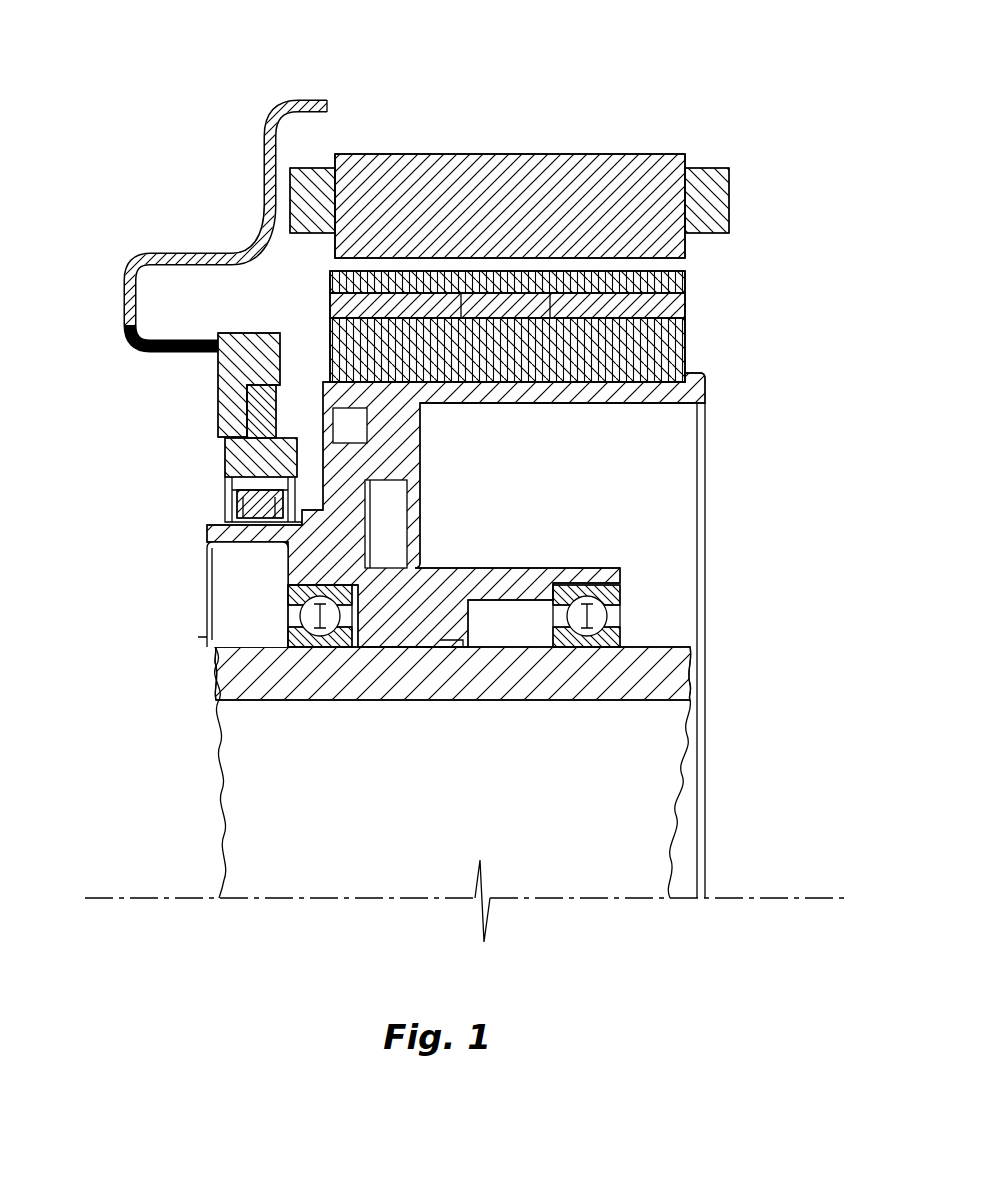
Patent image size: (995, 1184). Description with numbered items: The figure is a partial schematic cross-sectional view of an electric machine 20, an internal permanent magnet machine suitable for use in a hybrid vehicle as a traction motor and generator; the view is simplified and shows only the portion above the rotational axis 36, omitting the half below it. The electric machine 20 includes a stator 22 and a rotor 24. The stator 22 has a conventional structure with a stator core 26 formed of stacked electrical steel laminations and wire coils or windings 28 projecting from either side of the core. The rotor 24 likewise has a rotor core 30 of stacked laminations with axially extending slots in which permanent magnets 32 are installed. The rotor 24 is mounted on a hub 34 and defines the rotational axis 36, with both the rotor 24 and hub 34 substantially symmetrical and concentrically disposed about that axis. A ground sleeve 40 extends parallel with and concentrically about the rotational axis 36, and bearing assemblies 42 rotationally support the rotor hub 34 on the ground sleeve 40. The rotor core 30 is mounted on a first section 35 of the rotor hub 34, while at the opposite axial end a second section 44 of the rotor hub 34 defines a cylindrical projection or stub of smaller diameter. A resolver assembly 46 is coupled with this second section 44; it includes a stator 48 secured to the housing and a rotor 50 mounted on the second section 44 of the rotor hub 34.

The electric machine 20 is at (181, 97).
The stator 22 is at (641, 146).
The rotor 24 is at (688, 333).
The stator core 26 is at (440, 160).
The windings 28 is at (320, 167).
The rotor core 30 is at (335, 285).
The permanent magnets 32 is at (335, 306).
The hub 34 is at (645, 392).
The first section 35 is at (545, 392).
The rotational axis 36 is at (733, 900).
The ground sleeve 40 is at (425, 688).
The bearing assemblies 42 is at (610, 600).
The second section 44 is at (262, 533).
The resolver assembly 46 is at (218, 405).
The stator 48 is at (232, 455).
The rotor 50 is at (263, 497).